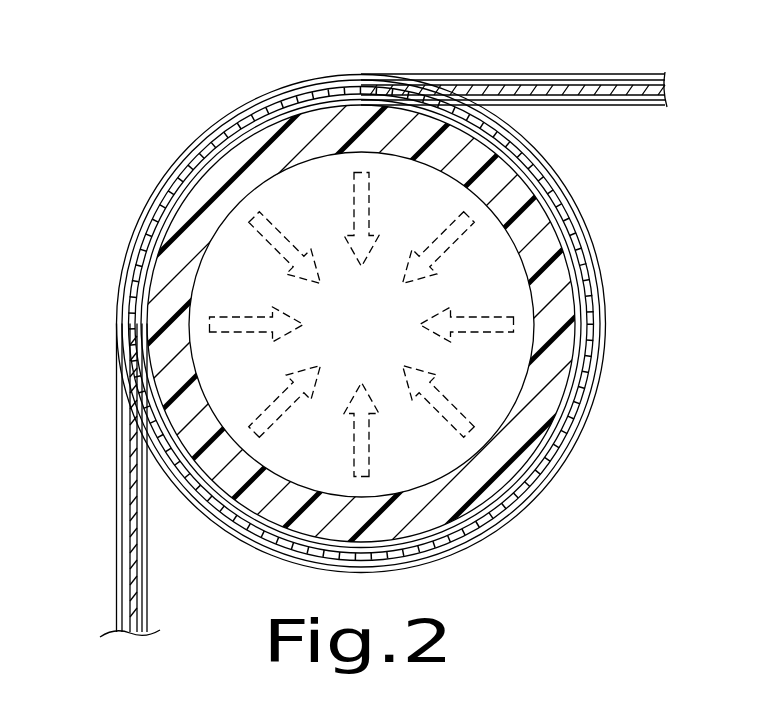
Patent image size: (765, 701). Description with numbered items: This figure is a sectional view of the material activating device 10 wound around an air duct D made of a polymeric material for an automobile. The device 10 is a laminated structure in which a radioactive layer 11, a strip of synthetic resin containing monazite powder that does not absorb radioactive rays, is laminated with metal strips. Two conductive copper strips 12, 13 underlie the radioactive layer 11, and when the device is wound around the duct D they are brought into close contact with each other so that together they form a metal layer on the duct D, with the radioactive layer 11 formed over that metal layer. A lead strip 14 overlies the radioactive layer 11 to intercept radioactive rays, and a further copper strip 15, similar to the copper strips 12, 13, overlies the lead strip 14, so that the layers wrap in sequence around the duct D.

The material activating device 10 is at (170, 115).
The radioactive layer 11 is at (522, 82).
The copper strip 12 is at (548, 103).
The copper strip 13 is at (620, 107).
The lead strip 14 is at (592, 82).
The copper strip 15 is at (647, 80).
The air duct D is at (207, 247).